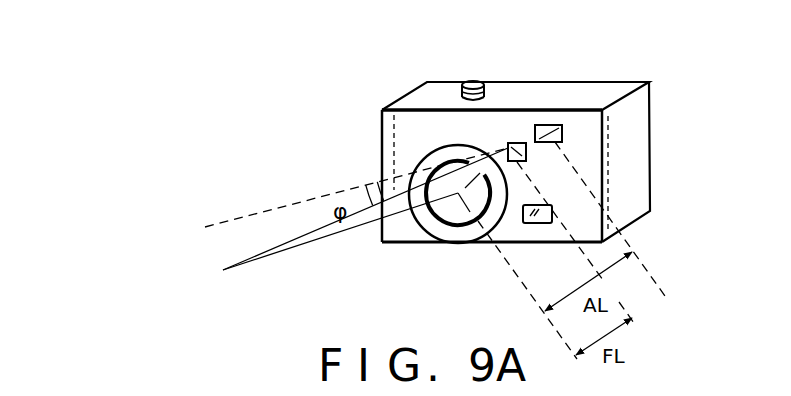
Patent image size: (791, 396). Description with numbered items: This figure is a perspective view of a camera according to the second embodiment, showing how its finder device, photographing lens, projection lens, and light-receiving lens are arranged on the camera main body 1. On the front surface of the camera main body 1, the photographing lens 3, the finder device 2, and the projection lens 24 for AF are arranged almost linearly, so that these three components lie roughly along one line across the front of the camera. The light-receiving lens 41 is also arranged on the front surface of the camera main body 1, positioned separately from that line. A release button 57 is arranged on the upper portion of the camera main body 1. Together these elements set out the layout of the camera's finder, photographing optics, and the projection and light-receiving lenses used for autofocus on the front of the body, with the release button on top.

The camera main body 1 is at (630, 138).
The finder device 2 is at (515, 142).
The photographing lens 3 is at (452, 218).
The projection lens 24 is at (552, 128).
The light-receiving lens 41 is at (550, 215).
The release button 57 is at (466, 82).